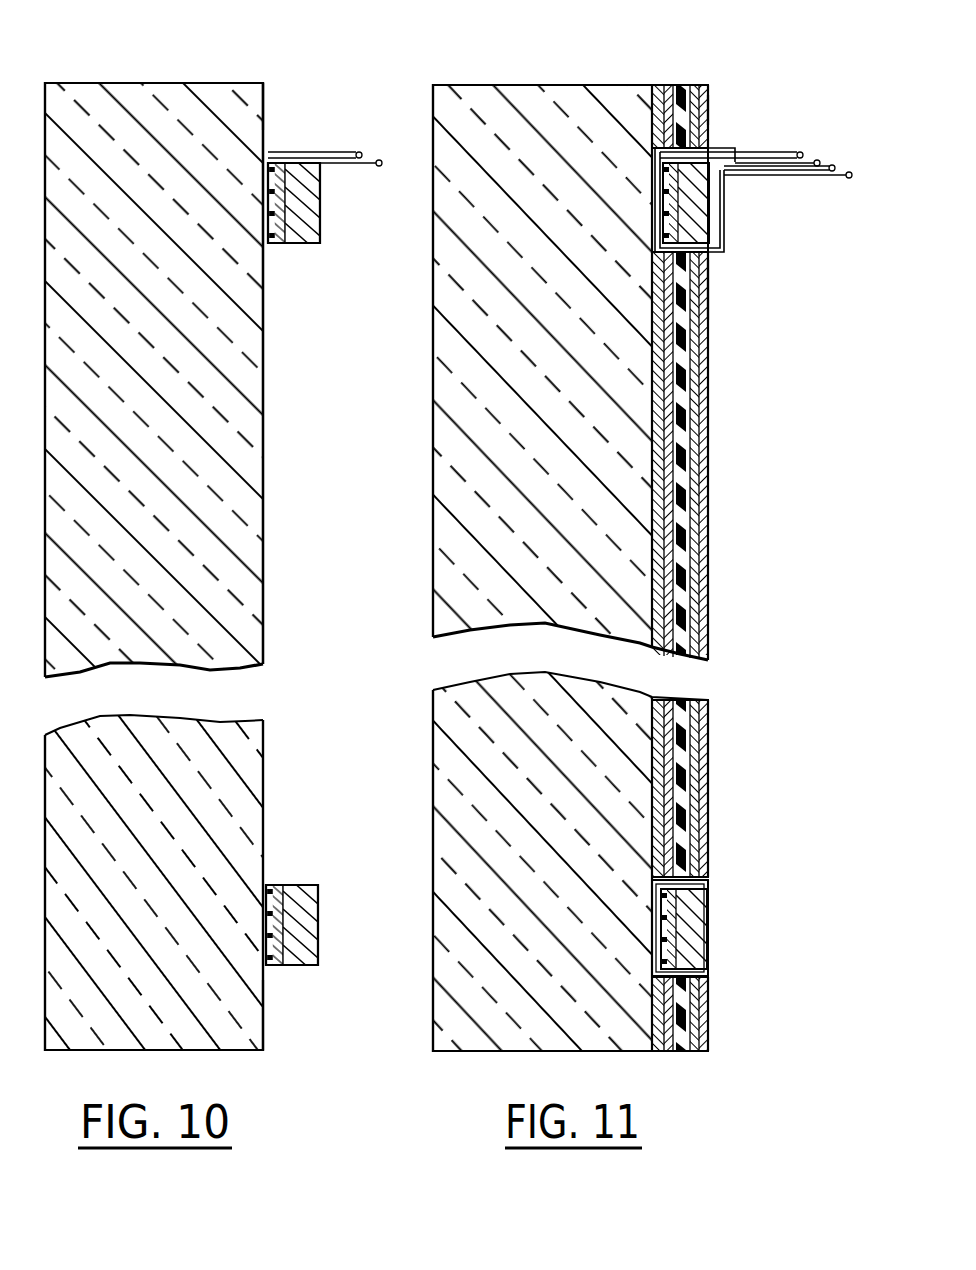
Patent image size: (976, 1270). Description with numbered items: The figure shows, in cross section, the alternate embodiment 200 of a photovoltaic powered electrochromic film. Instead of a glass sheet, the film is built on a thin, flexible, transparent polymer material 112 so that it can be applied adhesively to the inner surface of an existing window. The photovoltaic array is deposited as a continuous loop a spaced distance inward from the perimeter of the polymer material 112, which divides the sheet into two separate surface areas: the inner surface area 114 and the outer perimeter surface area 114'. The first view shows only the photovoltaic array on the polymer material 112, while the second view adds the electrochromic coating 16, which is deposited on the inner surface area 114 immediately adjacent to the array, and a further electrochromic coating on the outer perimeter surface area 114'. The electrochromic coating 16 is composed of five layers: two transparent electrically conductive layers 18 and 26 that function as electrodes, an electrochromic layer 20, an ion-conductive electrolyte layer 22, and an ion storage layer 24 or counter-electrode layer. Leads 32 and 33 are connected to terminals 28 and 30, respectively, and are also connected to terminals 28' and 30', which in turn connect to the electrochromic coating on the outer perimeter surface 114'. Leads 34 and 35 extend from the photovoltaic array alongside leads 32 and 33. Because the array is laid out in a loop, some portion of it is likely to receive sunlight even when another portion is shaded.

In FIG. 10, the alternate embodiment 200 is at (134, 78).
In FIG. 11, the alternate embodiment 200 is at (521, 80).
In FIG. 10, the thin, flexible, transparent polymer material 112 is at (36, 666).
In FIG. 11, the thin, flexible, transparent polymer material 112 is at (430, 577).
In FIG. 10, the inner surface area 114 is at (293, 373).
In FIG. 11, the inner surface area 114 is at (715, 366).
In FIG. 11, the outer perimeter surface area 114' is at (718, 889).
In FIG. 10, the lead 34 is at (300, 152).
In FIG. 11, the lead 34 is at (780, 152).
In FIG. 10, the lead 35 is at (371, 157).
In FIG. 11, the lead 35 is at (818, 161).
In FIG. 11, the lead 32 is at (786, 172).
In FIG. 11, the lead 33 is at (842, 178).
In FIG. 11, the electrochromic coating 16 is at (713, 372).
In FIG. 11, the transparent electrically conductive layer 18 is at (712, 377).
In FIG. 11, the electrochromic layer 20 is at (703, 405).
In FIG. 11, the ion-conductive electrolyte layer 22 is at (703, 433).
In FIG. 11, the ion storage layer 24 is at (703, 461).
In FIG. 11, the transparent electrically conductive layer 26 is at (703, 490).
In FIG. 11, the terminal 28 is at (744, 307).
In FIG. 11, the terminal 30 is at (744, 278).
In FIG. 11, the terminal 28' is at (749, 105).
In FIG. 11, the terminal 30' is at (721, 548).